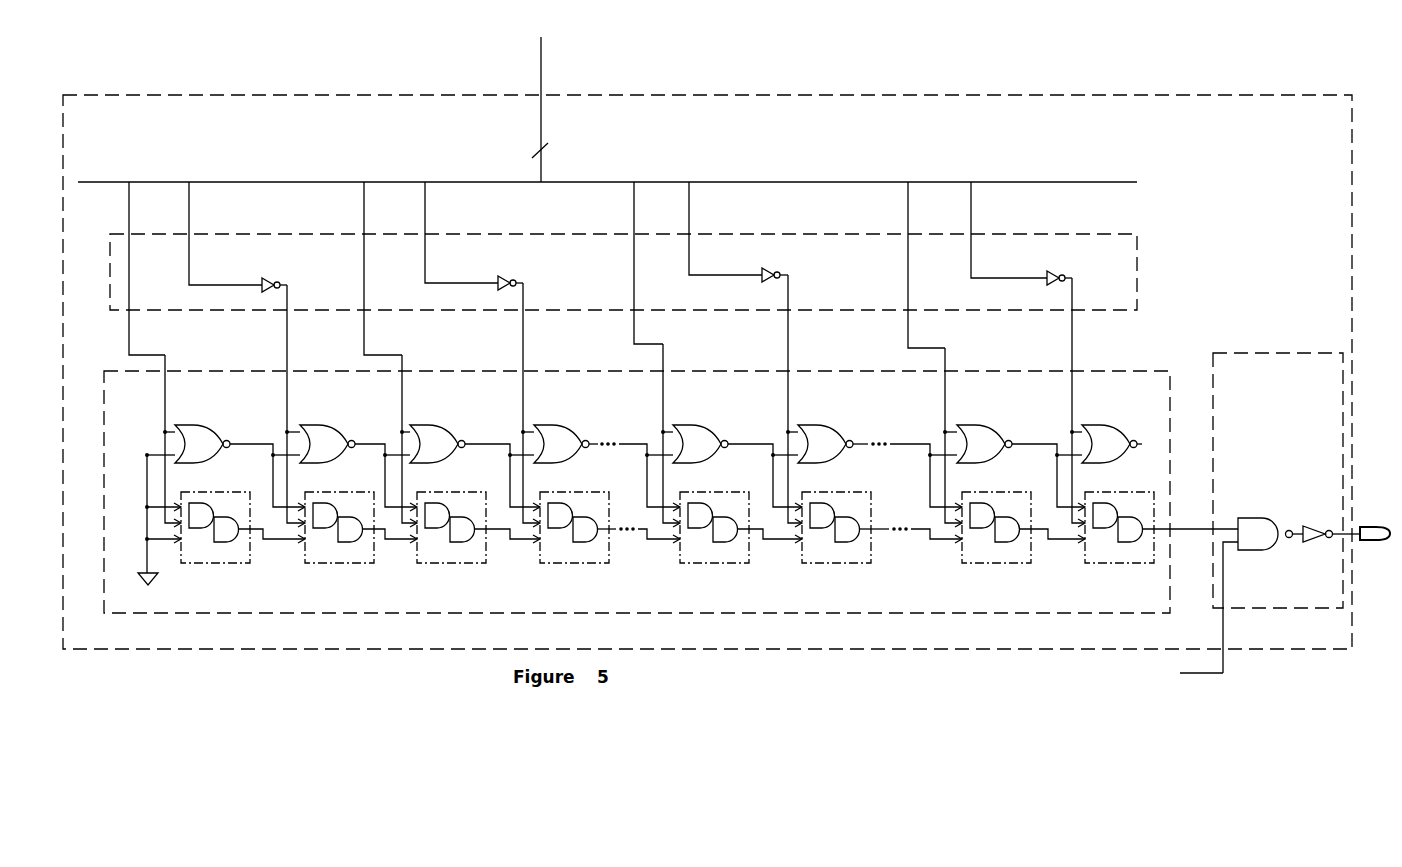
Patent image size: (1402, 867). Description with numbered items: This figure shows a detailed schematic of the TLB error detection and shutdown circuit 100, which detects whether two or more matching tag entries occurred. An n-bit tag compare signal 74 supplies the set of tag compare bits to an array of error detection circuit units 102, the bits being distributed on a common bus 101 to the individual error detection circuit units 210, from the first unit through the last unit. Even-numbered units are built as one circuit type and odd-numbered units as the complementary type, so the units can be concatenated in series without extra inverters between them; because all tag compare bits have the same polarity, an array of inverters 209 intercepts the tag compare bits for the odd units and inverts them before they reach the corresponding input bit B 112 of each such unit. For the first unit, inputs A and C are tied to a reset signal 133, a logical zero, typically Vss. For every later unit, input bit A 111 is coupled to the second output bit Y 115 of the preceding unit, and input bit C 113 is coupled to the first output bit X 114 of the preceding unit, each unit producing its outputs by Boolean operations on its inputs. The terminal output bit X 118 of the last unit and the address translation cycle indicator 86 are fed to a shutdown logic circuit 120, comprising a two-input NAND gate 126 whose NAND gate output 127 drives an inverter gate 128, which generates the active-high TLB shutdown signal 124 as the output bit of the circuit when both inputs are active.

The TLB error detection and shutdown circuit 100 is at (707, 360).
The n-bit tag compare signal 74 is at (551, 109).
The address bus 101 is at (607, 167).
The array of inverters 209 is at (623, 268).
The array of error detection circuit units 102 is at (637, 469).
The error detection circuit unit 210 is at (654, 420).
The shutdown logic circuit 120 is at (1278, 467).
The reset signal 133 is at (157, 528).
The input bit B i 112 is at (723, 438).
The input bit A i 111 is at (764, 477).
The input bit C i 113 is at (769, 547).
The second output bit Y i 115 is at (907, 463).
The first output bit X i 114 is at (910, 522).
The terminal output bit X n-1 118 is at (1190, 517).
The two-input NAND gate 126 is at (1270, 519).
The NAND gate output 127 is at (1266, 607).
The address translation cycle indicator 86 is at (1185, 674).
The inverter gate 128 is at (1331, 515).
The TLB shutdown signal 124 is at (1374, 523).